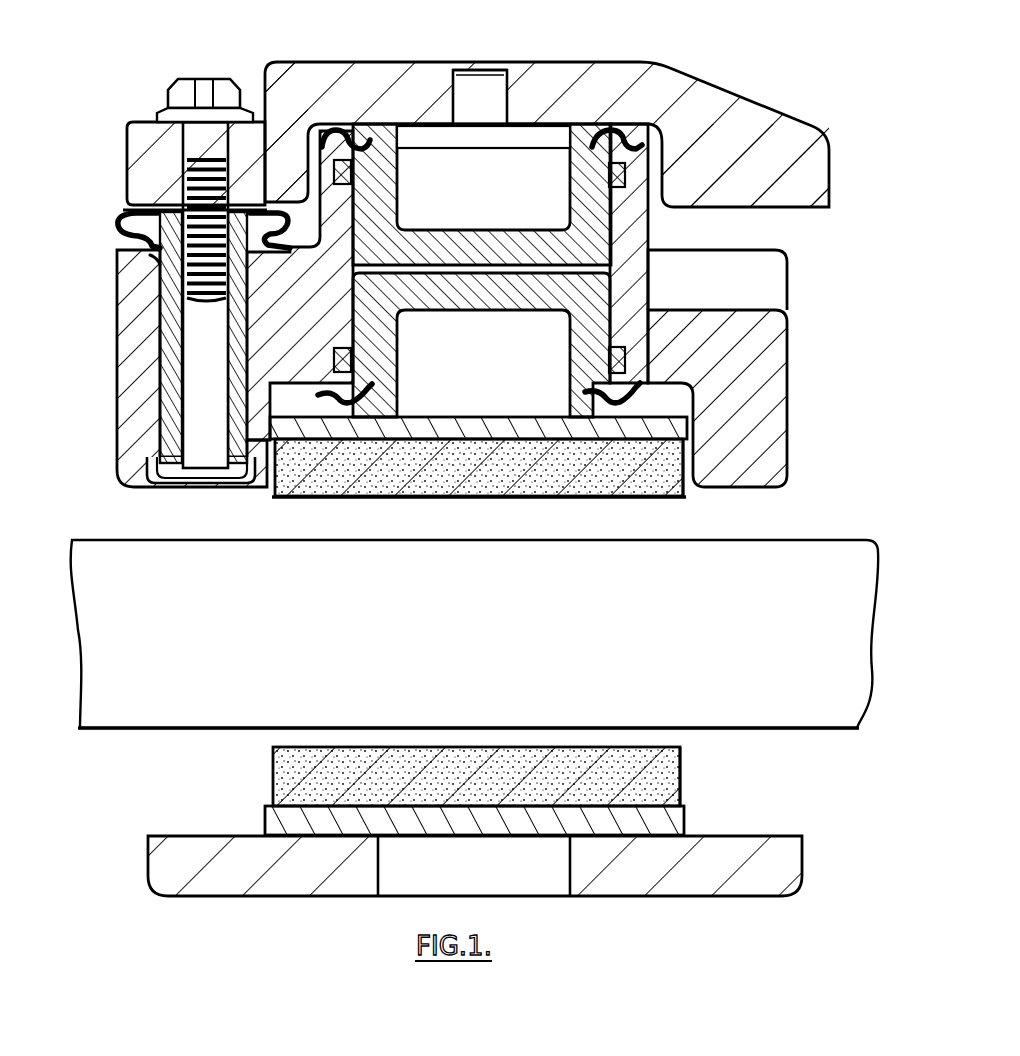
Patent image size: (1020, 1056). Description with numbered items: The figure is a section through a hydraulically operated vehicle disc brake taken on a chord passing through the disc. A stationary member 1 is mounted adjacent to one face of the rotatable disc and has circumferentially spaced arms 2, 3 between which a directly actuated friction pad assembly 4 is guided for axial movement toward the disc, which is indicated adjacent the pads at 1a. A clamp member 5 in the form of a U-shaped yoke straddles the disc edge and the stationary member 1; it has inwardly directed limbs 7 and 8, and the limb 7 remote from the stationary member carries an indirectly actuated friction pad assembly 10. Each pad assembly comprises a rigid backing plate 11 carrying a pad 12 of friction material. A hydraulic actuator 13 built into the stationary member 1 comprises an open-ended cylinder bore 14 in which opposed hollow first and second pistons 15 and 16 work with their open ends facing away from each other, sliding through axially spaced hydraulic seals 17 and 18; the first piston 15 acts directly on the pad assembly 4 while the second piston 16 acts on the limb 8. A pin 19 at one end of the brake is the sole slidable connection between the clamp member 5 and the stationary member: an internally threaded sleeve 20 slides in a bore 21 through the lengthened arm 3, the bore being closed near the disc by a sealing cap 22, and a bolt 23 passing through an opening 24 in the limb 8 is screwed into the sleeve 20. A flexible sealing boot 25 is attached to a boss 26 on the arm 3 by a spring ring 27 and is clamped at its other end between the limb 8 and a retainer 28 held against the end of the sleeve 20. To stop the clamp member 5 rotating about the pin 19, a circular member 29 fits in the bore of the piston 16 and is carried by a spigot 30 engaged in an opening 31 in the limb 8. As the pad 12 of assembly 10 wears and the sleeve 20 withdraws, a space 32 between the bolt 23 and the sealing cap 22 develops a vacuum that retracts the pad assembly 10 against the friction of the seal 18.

The stationary member 1 is at (758, 340).
The brake disc 1a is at (102, 706).
The arm 2 is at (742, 470).
The arm 3 is at (137, 423).
The directly actuated friction pad assembly 4 is at (606, 467).
The clamp member 5 is at (793, 152).
The limb 7 is at (296, 874).
The limb 8 is at (617, 97).
The indirectly actuated friction pad assembly 10 is at (290, 773).
The backing plate 11 is at (665, 430).
The pad 12 is at (687, 492).
The hydraulic actuator 13 is at (384, 163).
The cylinder bore 14 is at (650, 262).
The first piston 15 is at (372, 357).
The second piston 16 is at (582, 137).
The hydraulic seal 17 is at (625, 348).
The hydraulic seal 18 is at (636, 140).
The pin 19 is at (155, 298).
The sleeve 20 is at (167, 345).
The bore 21 is at (158, 322).
The sealing cap 22 is at (186, 485).
The bolt 23 is at (190, 172).
The opening 24 is at (181, 141).
The flexible sealing boot 25 is at (124, 222).
The boss 26 is at (153, 260).
The spring ring 27 is at (258, 158).
The retainer 28 is at (276, 66).
The circular member 29 is at (415, 140).
The spigot 30 is at (472, 95).
The opening 31 is at (524, 82).
The space 32 is at (221, 477).